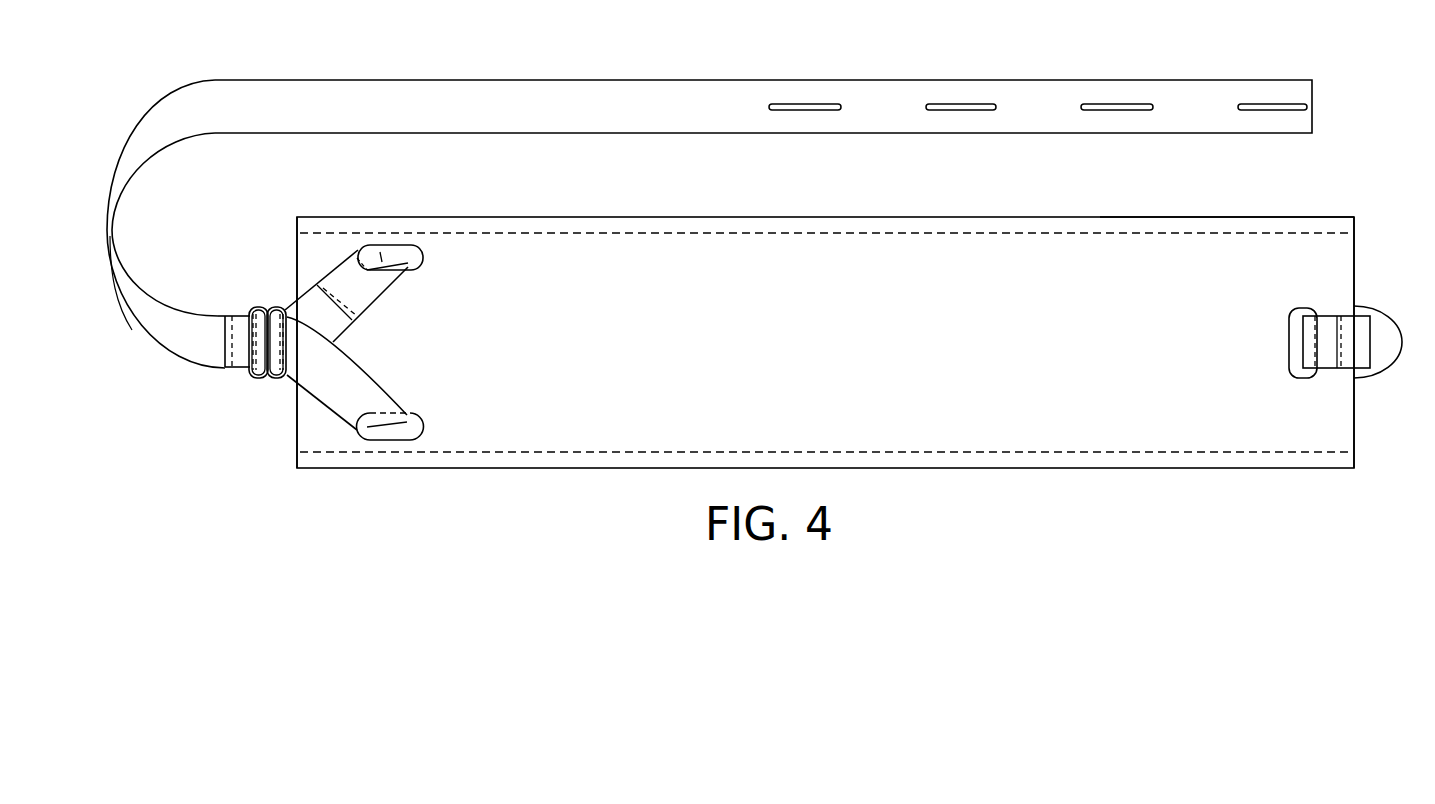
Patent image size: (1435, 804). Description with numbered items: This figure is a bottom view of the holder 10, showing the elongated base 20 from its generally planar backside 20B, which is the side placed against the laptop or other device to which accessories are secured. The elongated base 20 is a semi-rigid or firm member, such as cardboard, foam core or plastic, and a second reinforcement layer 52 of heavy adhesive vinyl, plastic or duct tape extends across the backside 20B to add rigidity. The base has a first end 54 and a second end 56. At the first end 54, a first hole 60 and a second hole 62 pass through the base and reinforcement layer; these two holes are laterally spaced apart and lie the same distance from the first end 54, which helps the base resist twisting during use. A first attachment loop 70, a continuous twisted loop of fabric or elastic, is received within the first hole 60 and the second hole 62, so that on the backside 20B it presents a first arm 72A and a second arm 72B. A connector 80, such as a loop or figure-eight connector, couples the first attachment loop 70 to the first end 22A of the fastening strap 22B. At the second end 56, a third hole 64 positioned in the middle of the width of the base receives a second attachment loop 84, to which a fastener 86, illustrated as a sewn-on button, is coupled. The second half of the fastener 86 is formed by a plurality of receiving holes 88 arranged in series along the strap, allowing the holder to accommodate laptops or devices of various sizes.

The holder 10 is at (546, 505).
The elongated base 20 is at (674, 215).
The backside 20B is at (988, 255).
The first end of the fastening strap 22A is at (242, 325).
The fastening strap 22B is at (1195, 92).
The second reinforcement layer 52 is at (1247, 245).
The first end 54 is at (297, 226).
The second end 56 is at (1356, 223).
The first hole 60 is at (387, 440).
The second hole 62 is at (390, 252).
The third hole 64 is at (1298, 317).
The first attachment loop 70 is at (380, 258).
The first arm 72A is at (348, 273).
The second arm 72B is at (347, 400).
The connector 80 is at (272, 378).
The second attachment loop 84 is at (1330, 368).
The fastener 86 is at (1375, 377).
The receiving holes 88 is at (805, 104).